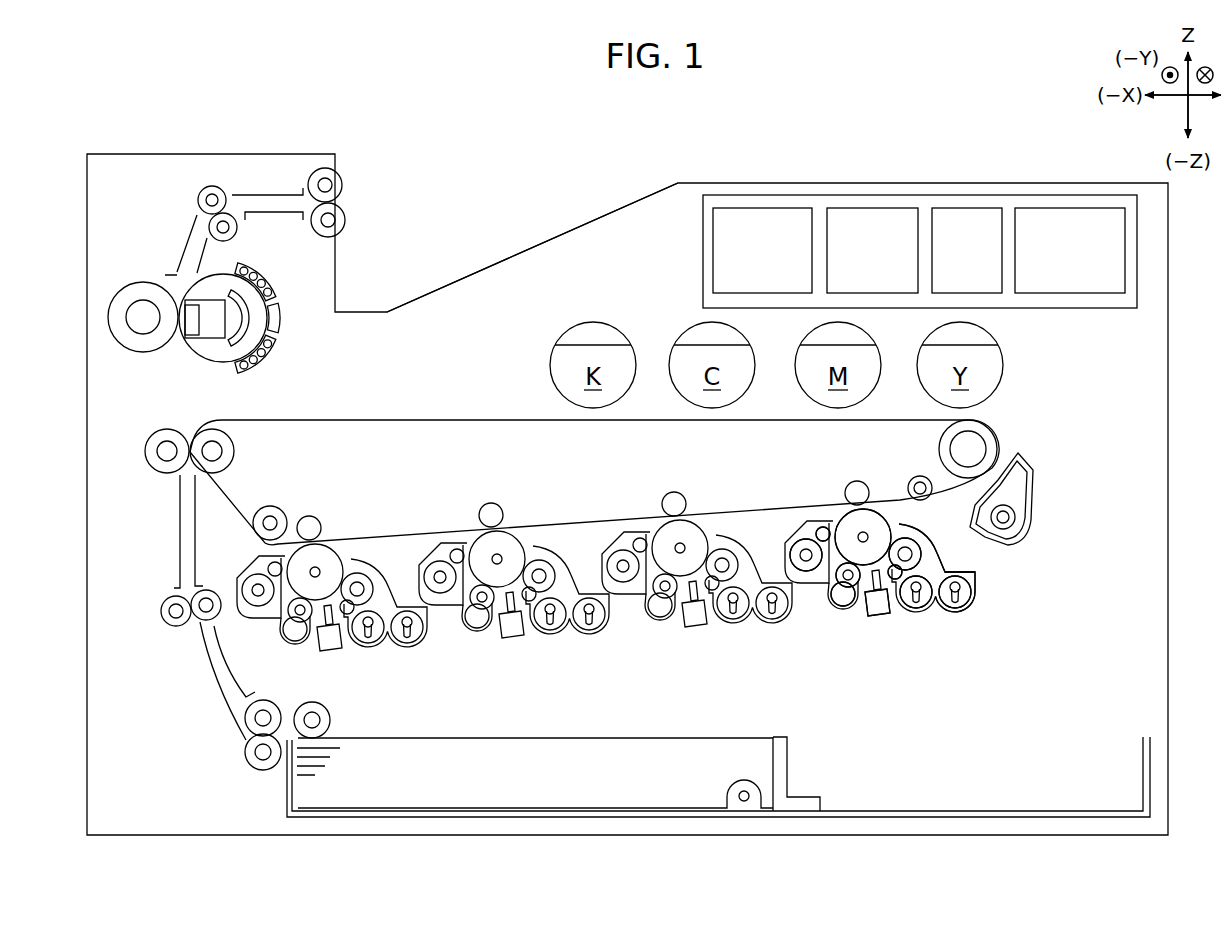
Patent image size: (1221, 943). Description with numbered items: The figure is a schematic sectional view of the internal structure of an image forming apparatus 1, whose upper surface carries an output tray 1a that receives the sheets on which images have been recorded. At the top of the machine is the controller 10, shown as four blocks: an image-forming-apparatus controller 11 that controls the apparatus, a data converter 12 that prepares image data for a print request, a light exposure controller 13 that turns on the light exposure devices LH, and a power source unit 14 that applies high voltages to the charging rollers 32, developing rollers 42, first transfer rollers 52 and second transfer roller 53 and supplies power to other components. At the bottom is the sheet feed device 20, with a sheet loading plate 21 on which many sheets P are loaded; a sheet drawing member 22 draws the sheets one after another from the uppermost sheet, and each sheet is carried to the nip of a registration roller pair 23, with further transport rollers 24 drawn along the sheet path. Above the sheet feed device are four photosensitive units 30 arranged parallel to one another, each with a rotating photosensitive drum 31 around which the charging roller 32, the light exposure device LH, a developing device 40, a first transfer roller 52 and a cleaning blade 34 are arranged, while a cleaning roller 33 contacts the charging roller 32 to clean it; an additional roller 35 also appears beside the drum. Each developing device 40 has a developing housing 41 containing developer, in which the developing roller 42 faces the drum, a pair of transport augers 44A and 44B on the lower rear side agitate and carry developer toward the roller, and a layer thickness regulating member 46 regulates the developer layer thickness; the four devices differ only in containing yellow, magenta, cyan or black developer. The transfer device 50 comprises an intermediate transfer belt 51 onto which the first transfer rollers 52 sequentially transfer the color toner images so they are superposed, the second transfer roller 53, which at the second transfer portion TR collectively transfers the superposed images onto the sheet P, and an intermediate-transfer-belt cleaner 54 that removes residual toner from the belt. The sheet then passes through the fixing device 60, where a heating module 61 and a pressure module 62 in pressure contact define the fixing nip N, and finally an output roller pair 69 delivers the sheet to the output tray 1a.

The image forming apparatus 1 is at (478, 173).
The output tray 1a is at (515, 255).
The controller 10 is at (690, 262).
The image-forming-apparatus controller 11 is at (762, 222).
The data converter 12 is at (878, 222).
The light exposure controller 13 is at (966, 222).
The power source unit 14 is at (1056, 222).
The sheet feed device 20 is at (718, 739).
The sheet loading plate 21 is at (956, 811).
The sheet drawing member 22 is at (782, 785).
The registration roller pair 23 is at (266, 770).
The transport rollers 24 is at (203, 622).
The photosensitive unit 30 is at (662, 561).
The photosensitive drum 31 is at (875, 523).
The charging roller 32 is at (825, 593).
The cleaning roller 33 is at (862, 585).
The cleaning blade 34 is at (842, 604).
The roller 35 is at (823, 527).
The developing device 40 is at (997, 597).
The developing housing 41 is at (967, 567).
The developing roller 42 is at (915, 553).
The transport auger 44A is at (928, 606).
The transport auger 44B is at (966, 610).
The layer thickness regulating member 46 is at (897, 580).
The transfer device 50 is at (609, 434).
The intermediate transfer belt 51 is at (360, 420).
The first transfer roller 52 is at (606, 544).
The second transfer roller 53 is at (152, 465).
The intermediate-transfer-belt cleaner 54 is at (1035, 450).
The fixing device 60 is at (236, 300).
The heating module 61 is at (230, 282).
The pressure module 62 is at (150, 283).
The output roller pair 69 is at (345, 218).
The light exposure device LH is at (880, 614).
The fixing nip N is at (190, 358).
The sheet P is at (443, 757).
The second transfer portion TR is at (188, 430).